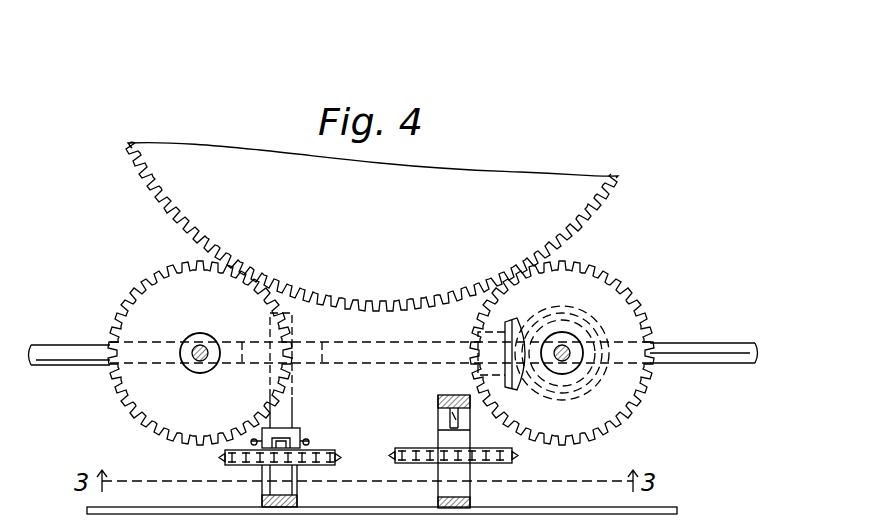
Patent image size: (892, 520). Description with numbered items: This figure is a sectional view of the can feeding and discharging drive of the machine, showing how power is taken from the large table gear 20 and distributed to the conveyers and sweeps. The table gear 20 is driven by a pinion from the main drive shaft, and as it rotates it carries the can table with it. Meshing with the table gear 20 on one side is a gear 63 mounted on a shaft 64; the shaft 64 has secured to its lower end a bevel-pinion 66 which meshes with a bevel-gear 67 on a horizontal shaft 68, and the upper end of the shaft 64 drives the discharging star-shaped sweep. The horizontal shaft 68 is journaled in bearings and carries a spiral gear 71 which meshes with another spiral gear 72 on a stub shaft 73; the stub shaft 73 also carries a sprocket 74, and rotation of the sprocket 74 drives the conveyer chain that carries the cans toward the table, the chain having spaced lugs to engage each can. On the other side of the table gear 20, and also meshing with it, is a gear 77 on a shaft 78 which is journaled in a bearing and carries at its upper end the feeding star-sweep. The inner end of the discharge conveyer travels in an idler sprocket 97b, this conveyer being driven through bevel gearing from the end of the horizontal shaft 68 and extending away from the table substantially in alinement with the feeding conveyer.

The large gear 20 is at (590, 211).
The gear 77 is at (151, 275).
The shaft 78 is at (203, 365).
The spiral gear 72 is at (308, 365).
The spiral gear 71 is at (294, 396).
The stub shaft 73 is at (300, 428).
The sprocket 74 is at (247, 468).
The gear 63 is at (622, 286).
The shaft 64 is at (563, 345).
The bevel-pinion 66 is at (598, 388).
The bevel-gear 67 is at (540, 387).
The horizontal shaft 68 is at (735, 335).
The idler sprocket 97b is at (500, 462).